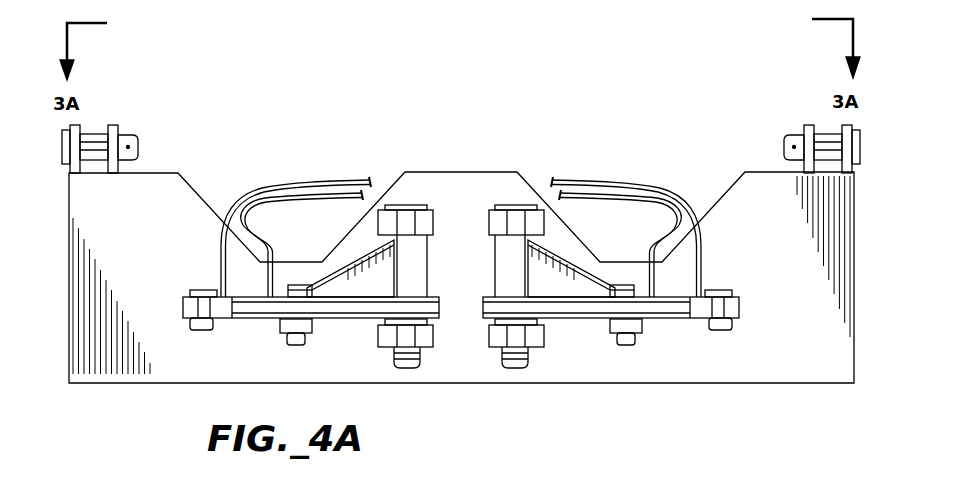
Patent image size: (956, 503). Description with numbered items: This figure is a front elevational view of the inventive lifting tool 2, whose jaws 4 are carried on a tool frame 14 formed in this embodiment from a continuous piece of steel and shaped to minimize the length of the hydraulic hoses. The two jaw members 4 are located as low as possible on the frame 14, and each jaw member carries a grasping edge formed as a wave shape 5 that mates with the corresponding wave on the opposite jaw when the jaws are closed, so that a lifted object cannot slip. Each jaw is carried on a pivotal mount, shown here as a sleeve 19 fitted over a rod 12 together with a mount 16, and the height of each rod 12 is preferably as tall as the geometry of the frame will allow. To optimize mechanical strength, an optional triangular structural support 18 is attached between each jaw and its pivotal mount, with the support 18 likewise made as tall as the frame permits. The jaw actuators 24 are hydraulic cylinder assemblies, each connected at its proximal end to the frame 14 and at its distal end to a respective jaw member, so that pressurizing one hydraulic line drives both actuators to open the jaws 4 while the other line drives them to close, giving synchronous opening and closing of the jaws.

The mounting apparatus 2 is at (296, 98).
The jaws 4 is at (474, 309).
The wave shape 5 is at (567, 308).
The rod 12 is at (405, 207).
The tool frame 14 is at (788, 288).
The mount 16 is at (428, 218).
The triangular structural support 18 is at (565, 275).
The sleeve 19 is at (413, 273).
The jaw actuators 24 is at (250, 333).